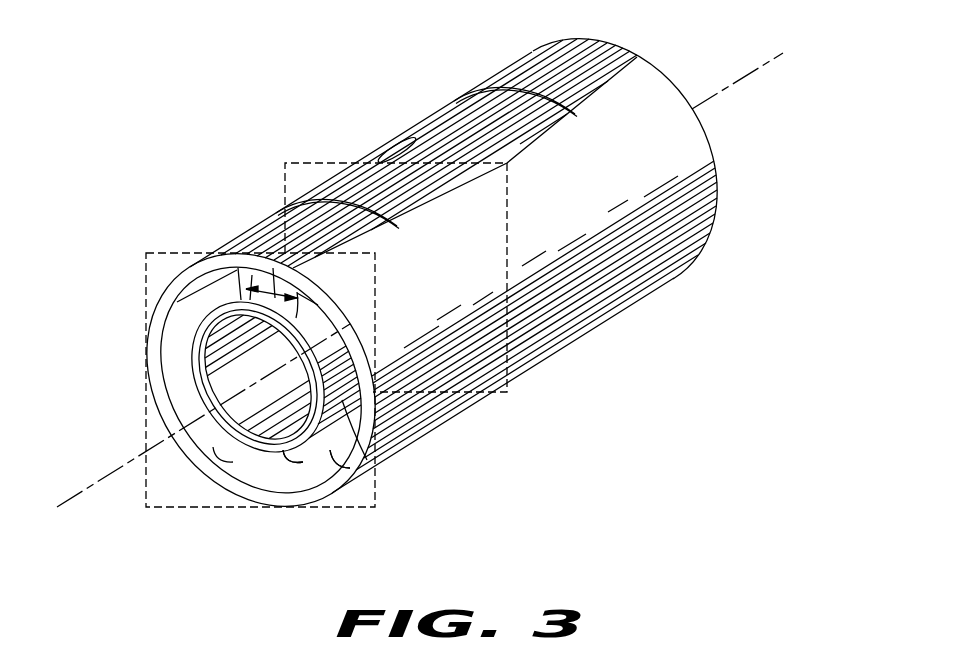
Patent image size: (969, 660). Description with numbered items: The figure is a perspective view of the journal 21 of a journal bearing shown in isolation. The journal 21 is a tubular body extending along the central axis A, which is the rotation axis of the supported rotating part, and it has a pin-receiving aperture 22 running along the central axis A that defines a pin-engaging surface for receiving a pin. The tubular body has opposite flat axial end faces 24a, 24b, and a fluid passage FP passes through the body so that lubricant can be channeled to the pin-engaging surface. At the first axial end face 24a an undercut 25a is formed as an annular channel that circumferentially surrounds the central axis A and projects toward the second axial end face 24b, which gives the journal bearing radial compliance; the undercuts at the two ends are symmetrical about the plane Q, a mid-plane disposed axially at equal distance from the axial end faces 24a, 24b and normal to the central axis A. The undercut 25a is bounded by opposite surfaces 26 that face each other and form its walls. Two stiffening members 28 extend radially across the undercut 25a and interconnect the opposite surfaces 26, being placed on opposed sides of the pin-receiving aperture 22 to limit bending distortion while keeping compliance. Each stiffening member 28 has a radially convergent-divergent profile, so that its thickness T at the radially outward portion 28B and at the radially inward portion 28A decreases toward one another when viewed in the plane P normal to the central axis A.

The journal 21 is at (778, 77).
The pin-receiving aperture 22 is at (216, 371).
The first axial end face 24a is at (170, 279).
The second axial end face 24b is at (730, 130).
The undercut 25a is at (170, 313).
The opposite surfaces 26 is at (342, 400).
The stiffening member 28 is at (265, 268).
The radially inward portion 28A is at (318, 466).
The radially outward portion 28B is at (290, 486).
The central axis A is at (80, 493).
The thickness T is at (270, 288).
The fluid passage FP is at (401, 136).
The plane P is at (373, 343).
The plane Q is at (507, 333).